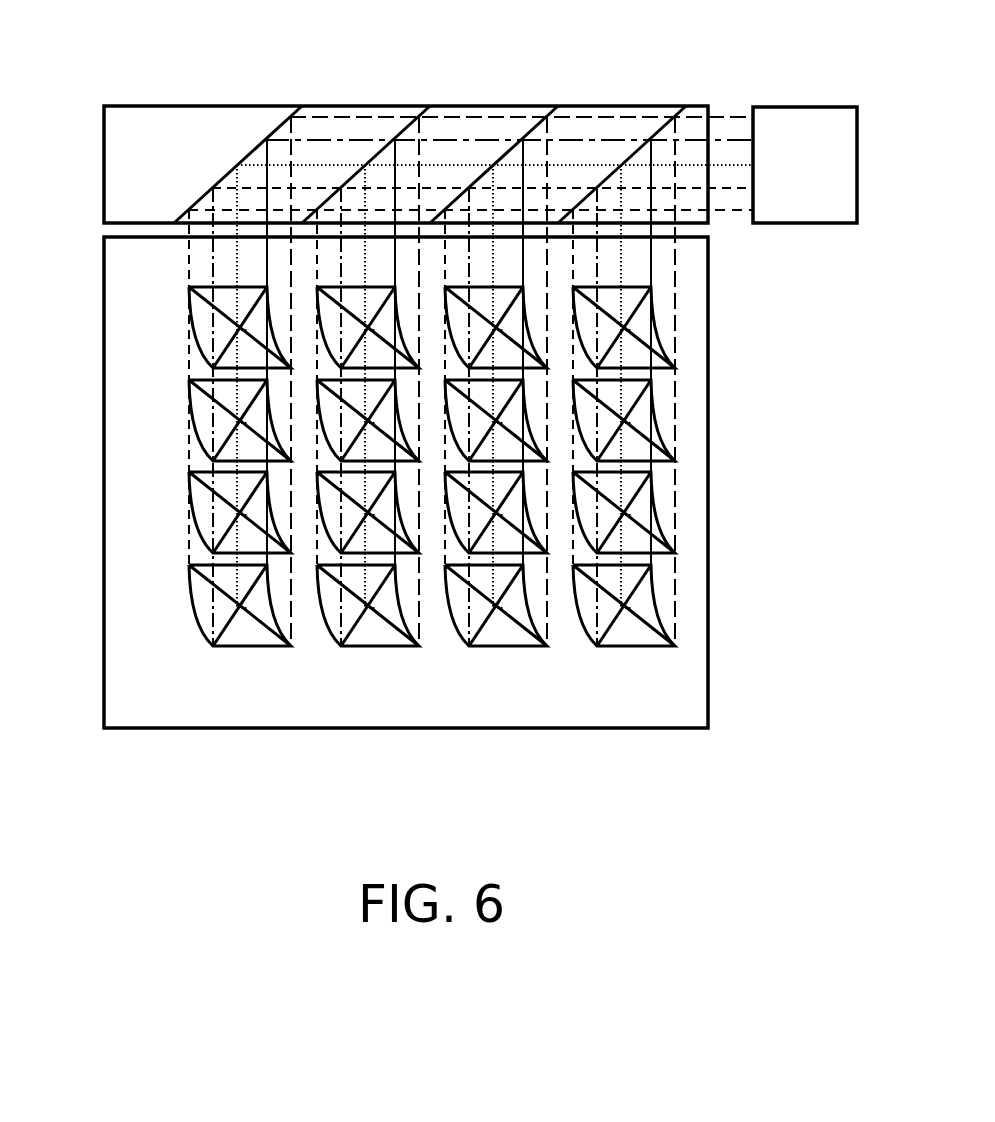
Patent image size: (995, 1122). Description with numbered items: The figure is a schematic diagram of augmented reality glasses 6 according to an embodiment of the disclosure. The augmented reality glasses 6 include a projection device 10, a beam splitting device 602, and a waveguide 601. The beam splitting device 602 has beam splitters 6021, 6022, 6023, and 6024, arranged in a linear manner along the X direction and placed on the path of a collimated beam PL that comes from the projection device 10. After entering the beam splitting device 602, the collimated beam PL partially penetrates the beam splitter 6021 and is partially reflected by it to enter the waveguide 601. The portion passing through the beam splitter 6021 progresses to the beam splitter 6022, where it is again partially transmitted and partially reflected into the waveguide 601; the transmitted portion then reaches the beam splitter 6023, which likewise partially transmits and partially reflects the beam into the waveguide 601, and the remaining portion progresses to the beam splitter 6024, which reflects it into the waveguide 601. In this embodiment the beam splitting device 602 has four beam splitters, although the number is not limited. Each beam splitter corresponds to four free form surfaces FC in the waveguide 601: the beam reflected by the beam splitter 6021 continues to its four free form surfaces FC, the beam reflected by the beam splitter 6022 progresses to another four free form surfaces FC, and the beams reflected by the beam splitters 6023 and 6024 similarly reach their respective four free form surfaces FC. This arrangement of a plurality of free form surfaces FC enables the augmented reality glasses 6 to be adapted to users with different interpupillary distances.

The augmented reality glasses 6 is at (448, 416).
The beam splitting device 602 is at (103, 165).
The waveguide 601 is at (708, 372).
The beam splitter 6024 is at (238, 106).
The beam splitter 6023 is at (363, 106).
The beam splitter 6022 is at (492, 106).
The beam splitter 6021 is at (622, 106).
The collimated beam PL is at (728, 115).
The projection device 10 is at (838, 107).
The free form surfaces FC is at (192, 603).